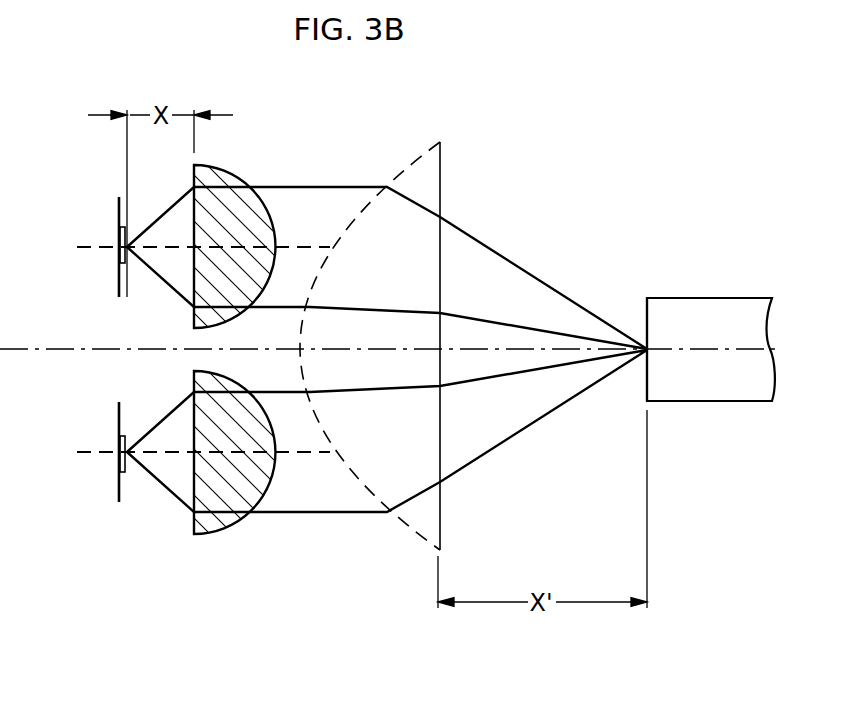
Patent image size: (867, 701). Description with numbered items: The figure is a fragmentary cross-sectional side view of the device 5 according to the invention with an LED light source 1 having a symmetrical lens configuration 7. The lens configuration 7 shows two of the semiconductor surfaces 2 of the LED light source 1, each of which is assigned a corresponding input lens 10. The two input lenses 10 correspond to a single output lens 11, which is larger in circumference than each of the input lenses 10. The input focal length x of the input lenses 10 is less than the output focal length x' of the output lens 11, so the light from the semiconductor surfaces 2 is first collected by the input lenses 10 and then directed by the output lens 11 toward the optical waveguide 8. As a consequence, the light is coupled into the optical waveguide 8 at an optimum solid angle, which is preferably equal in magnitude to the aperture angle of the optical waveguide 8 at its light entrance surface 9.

The LED light source 1 is at (96, 229).
The semiconductor surface 2 is at (123, 250).
The device 5 is at (580, 197).
The lens configuration 7 is at (325, 595).
The optical waveguide 8 is at (708, 387).
The light entrance surface 9 is at (648, 308).
The input lens 10 is at (210, 178).
The output lens 11 is at (425, 180).